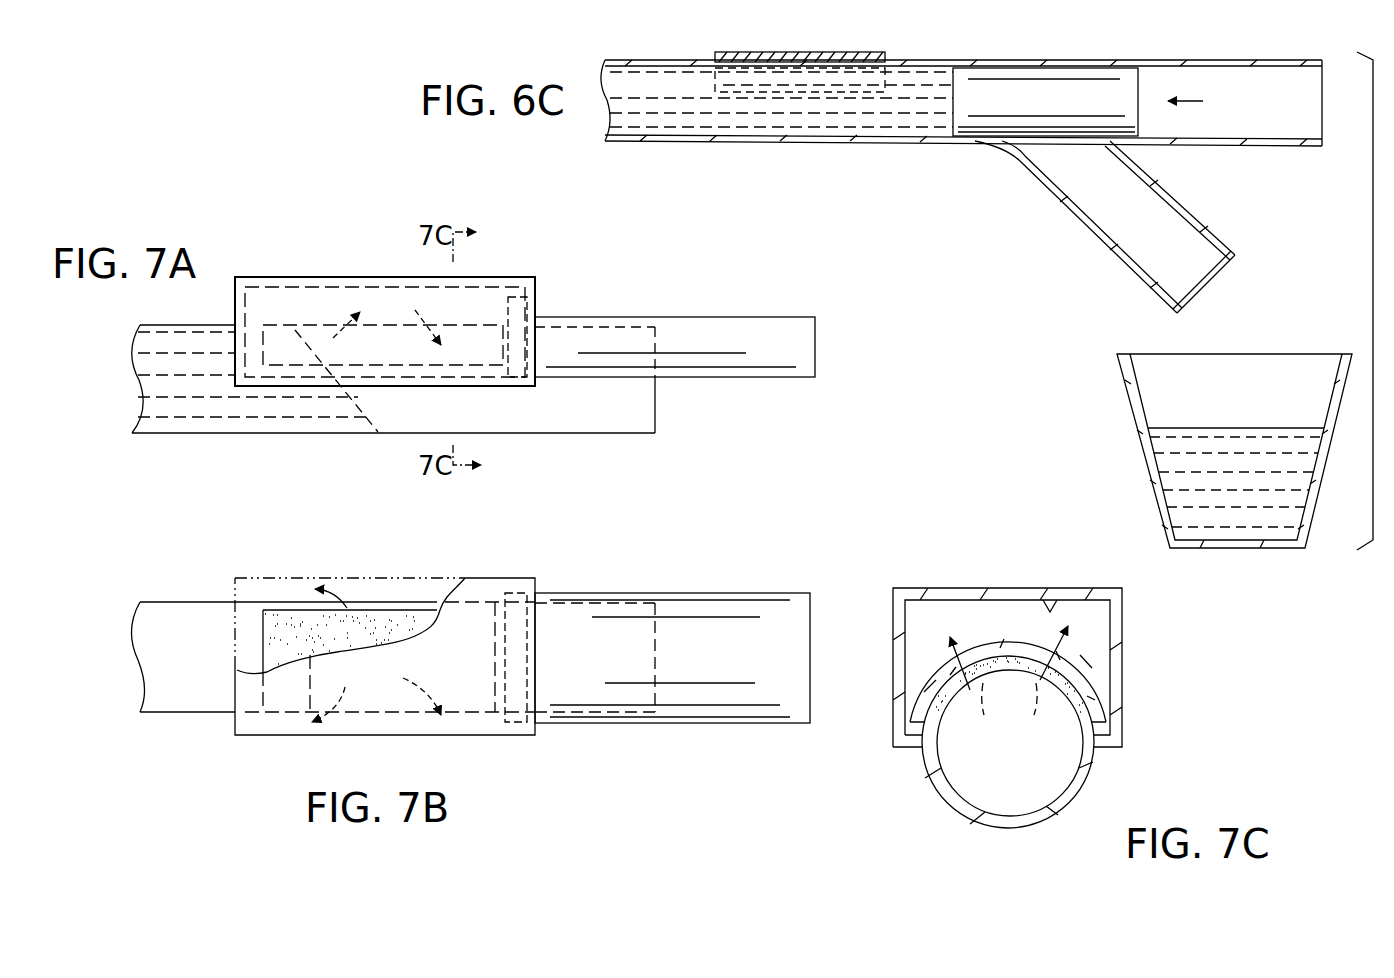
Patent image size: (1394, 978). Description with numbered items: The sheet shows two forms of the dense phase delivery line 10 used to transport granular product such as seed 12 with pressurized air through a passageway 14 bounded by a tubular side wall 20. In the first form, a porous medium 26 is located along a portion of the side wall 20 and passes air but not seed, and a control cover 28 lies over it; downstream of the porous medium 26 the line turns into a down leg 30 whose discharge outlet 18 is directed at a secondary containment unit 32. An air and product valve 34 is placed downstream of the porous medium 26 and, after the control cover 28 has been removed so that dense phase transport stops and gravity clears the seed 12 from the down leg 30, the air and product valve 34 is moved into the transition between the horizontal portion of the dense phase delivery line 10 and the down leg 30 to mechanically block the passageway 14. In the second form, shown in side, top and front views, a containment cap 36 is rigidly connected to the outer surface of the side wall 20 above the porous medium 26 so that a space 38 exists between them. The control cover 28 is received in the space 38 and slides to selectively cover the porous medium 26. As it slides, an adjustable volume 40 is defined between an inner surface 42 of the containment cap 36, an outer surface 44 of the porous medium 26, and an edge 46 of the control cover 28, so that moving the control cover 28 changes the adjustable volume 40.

In FIG. 6C, the dense phase delivery line 10 is at (961, 151).
In FIG. 7A, the dense phase delivery line 10 is at (363, 404).
In FIG. 7B, the dense phase delivery line 10 is at (520, 762).
In FIG. 7C, the dense phase delivery line 10 is at (963, 829).
In FIG. 6C, the seed 12 is at (655, 122).
In FIG. 7A, the seed 12 is at (155, 407).
In FIG. 6C, the passageway 14 is at (778, 122).
In FIG. 7A, the passageway 14 is at (571, 418).
In FIG. 7C, the passageway 14 is at (1053, 770).
In FIG. 6C, the discharge outlet 18 is at (1213, 281).
In FIG. 7A, the discharge outlet 18 is at (656, 402).
In FIG. 6C, the side wall 20 is at (957, 143).
In FIG. 7C, the side wall 20 is at (937, 785).
In FIG. 6C, the porous medium 26 is at (867, 62).
In FIG. 7B, the porous medium 26 is at (378, 620).
In FIG. 7C, the porous medium 26 is at (1080, 700).
In FIG. 6C, the control cover 28 is at (750, 57).
In FIG. 7A, the control cover 28 is at (738, 327).
In FIG. 7B, the control cover 28 is at (785, 612).
In FIG. 7C, the control cover 28 is at (1080, 680).
In FIG. 6C, the down leg 30 is at (1190, 213).
In FIG. 6C, the secondary containment unit 32 is at (1106, 433).
In FIG. 6C, the air and product valve 34 is at (1030, 92).
In FIG. 7A, the containment cap 36 is at (487, 288).
In FIG. 7B, the containment cap 36 is at (485, 590).
In FIG. 7C, the containment cap 36 is at (998, 590).
In FIG. 7A, the space 38 is at (488, 306).
In FIG. 7C, the space 38 is at (937, 608).
In FIG. 7A, the adjustable volume 40 is at (405, 317).
In FIG. 7C, the adjustable volume 40 is at (1022, 634).
In FIG. 7C, the inner surface 42 is at (1058, 608).
In FIG. 7C, the outer surface 44 is at (943, 687).
In FIG. 7C, the edge 46 is at (1087, 662).